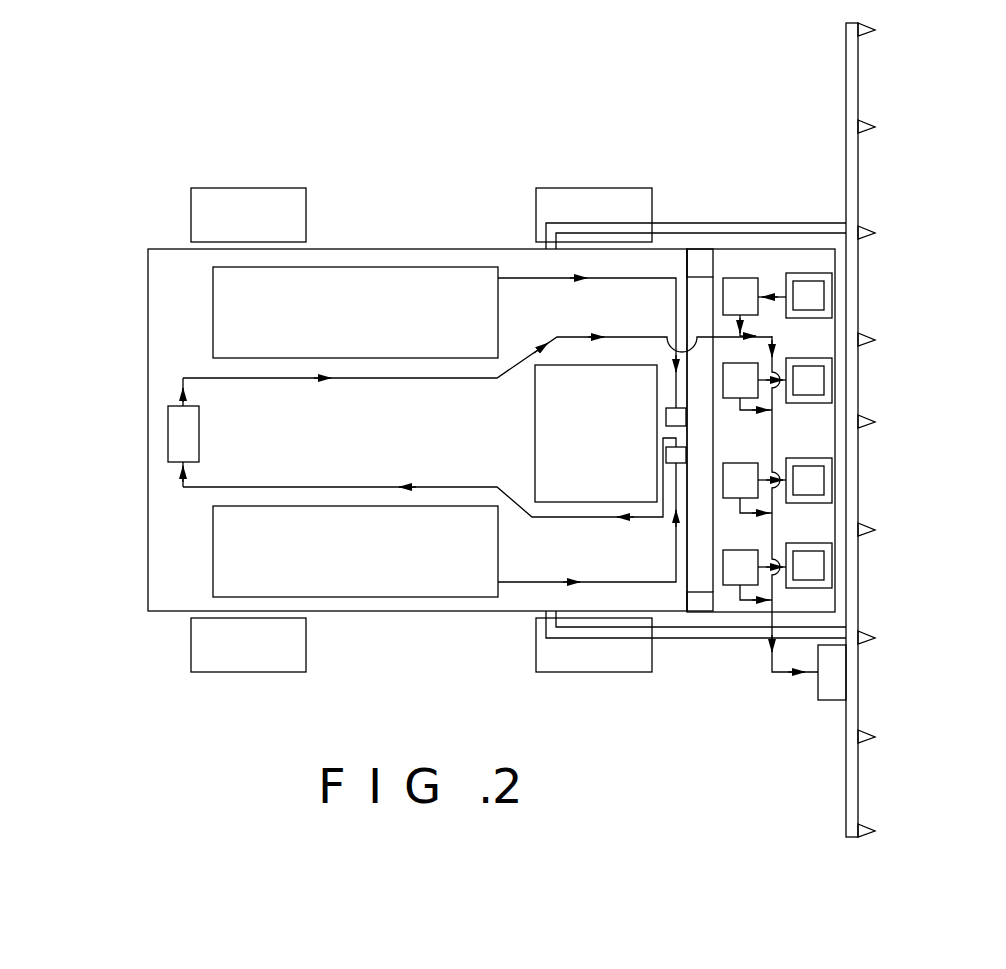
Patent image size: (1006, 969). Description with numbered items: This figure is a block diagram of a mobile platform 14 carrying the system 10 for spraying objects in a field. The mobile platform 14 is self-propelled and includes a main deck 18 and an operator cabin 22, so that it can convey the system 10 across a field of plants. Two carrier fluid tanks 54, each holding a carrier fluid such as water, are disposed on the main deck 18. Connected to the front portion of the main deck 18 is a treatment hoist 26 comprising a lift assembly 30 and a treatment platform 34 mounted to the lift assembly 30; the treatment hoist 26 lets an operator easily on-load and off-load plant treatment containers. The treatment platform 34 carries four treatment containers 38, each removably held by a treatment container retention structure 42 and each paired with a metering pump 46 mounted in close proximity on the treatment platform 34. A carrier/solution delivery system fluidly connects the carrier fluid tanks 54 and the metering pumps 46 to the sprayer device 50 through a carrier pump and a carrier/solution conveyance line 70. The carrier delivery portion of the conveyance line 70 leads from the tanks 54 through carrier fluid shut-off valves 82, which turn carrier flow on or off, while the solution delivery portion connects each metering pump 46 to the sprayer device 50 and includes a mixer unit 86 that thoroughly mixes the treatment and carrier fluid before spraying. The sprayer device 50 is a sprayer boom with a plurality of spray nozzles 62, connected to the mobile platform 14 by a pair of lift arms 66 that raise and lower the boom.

The system for spraying objects 10 is at (935, 207).
The mobile platform 14 is at (500, 155).
The main deck 18 is at (354, 434).
The operator cabin 22 is at (566, 439).
The treatment hoist 26 is at (760, 247).
The lift assembly 30 is at (706, 250).
The treatment platform 34 is at (772, 423).
The treatment container 38 is at (812, 303).
The treatment container retention structure 42 is at (820, 273).
The metering pump 46 is at (730, 308).
The sprayer device 50 is at (856, 605).
The carrier fluid tank 54 is at (331, 325).
The spray nozzle 62 is at (868, 27).
The lift arm 66 is at (688, 230).
The carrier/solution conveyance line 70 is at (527, 265).
The carrier fluid shut-off valve 82 is at (664, 416).
The mixer unit 86 is at (836, 700).